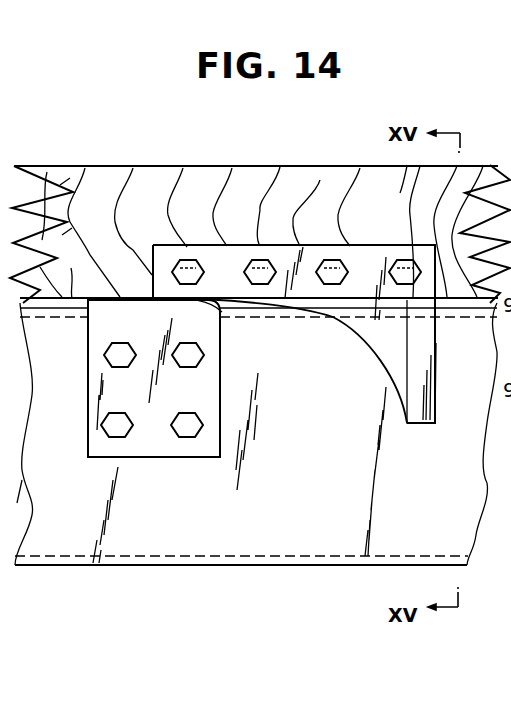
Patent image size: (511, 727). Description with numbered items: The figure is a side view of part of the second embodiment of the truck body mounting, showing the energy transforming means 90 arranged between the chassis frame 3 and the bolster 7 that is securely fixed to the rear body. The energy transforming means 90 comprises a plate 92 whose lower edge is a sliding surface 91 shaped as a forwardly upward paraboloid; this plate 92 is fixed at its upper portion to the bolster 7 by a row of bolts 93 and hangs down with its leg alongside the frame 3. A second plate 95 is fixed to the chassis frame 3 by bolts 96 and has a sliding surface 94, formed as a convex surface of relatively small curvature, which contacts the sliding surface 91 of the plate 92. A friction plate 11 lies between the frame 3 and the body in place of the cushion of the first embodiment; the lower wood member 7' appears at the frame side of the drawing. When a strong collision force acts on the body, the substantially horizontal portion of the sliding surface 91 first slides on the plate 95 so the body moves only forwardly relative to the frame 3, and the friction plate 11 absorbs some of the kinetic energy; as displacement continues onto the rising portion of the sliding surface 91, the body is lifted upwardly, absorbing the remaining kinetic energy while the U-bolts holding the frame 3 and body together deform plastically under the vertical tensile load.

The chassis frame 3 is at (298, 535).
The bolster 7 is at (260, 216).
The wood member 7' is at (11, 491).
The friction plate 11 is at (74, 270).
The energy transforming means 90 is at (130, 268).
The sliding surface 91 is at (367, 340).
The plate 92 is at (436, 345).
The bolts 93 is at (332, 258).
The sliding surface 94 is at (207, 300).
The plate 95 is at (153, 457).
The bolts 96 is at (104, 355).